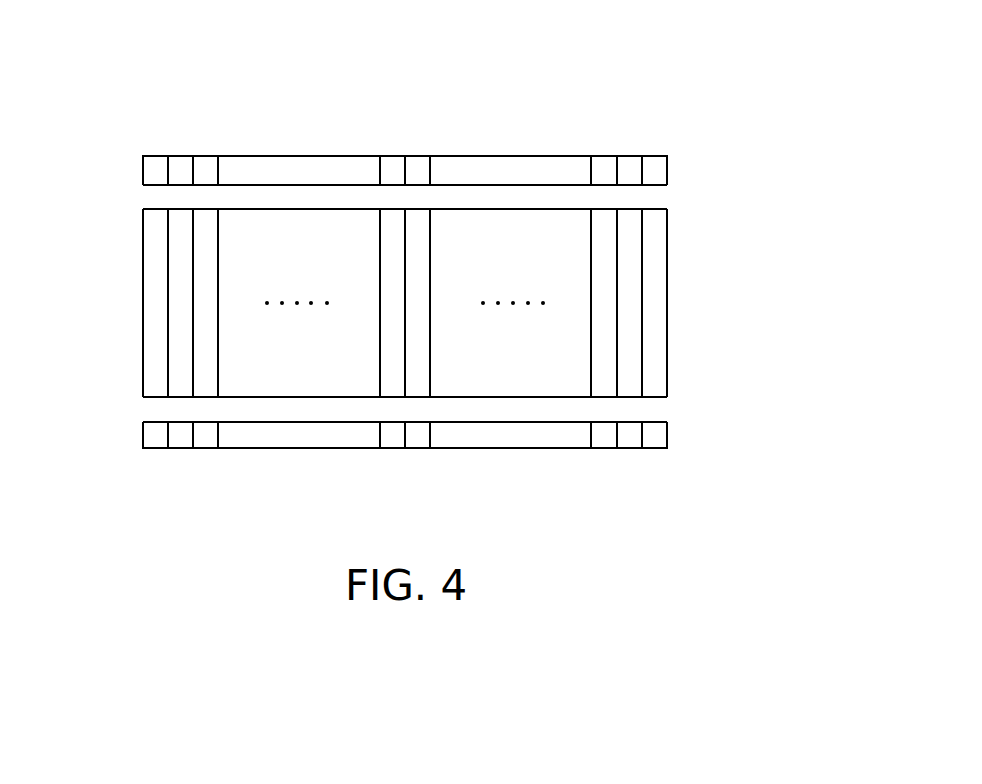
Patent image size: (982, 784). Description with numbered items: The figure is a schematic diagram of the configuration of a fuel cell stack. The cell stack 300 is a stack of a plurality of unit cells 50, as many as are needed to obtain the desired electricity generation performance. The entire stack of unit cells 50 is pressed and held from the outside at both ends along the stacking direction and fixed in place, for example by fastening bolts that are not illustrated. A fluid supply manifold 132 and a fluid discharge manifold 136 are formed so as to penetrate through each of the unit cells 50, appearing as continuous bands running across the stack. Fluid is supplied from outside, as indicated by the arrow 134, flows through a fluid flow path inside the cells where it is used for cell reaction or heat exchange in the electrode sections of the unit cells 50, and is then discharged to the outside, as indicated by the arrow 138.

The cell stack 300 is at (291, 91).
The unit cell 50 is at (218, 133).
The fluid supply manifold 132 is at (519, 195).
The arrow 134 is at (127, 203).
The fluid discharge manifold 136 is at (533, 413).
The arrow 138 is at (143, 409).